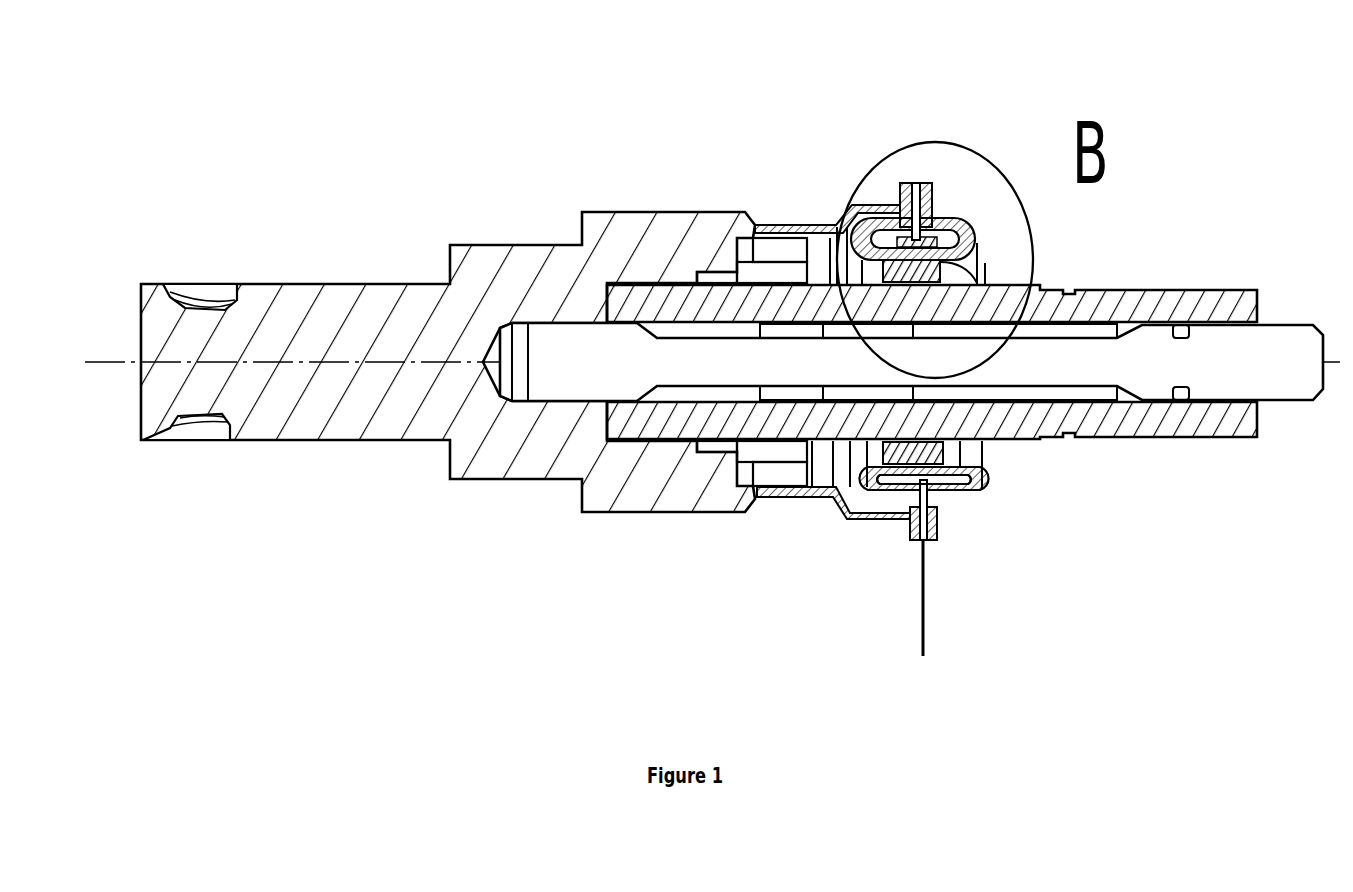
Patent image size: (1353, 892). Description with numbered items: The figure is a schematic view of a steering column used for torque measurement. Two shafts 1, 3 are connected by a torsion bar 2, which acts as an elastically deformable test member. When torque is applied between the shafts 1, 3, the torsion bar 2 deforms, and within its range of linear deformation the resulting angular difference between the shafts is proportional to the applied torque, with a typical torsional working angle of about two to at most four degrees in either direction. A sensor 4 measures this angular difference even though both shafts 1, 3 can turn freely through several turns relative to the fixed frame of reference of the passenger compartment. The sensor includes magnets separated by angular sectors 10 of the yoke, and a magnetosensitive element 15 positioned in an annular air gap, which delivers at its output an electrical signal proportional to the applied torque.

The shaft 1 is at (438, 352).
The torsion bar 2 is at (612, 351).
The shaft 3 is at (1140, 300).
The sensor 4 is at (961, 143).
The angular sectors 10 is at (980, 477).
The magnetosensitive element 15 is at (937, 535).